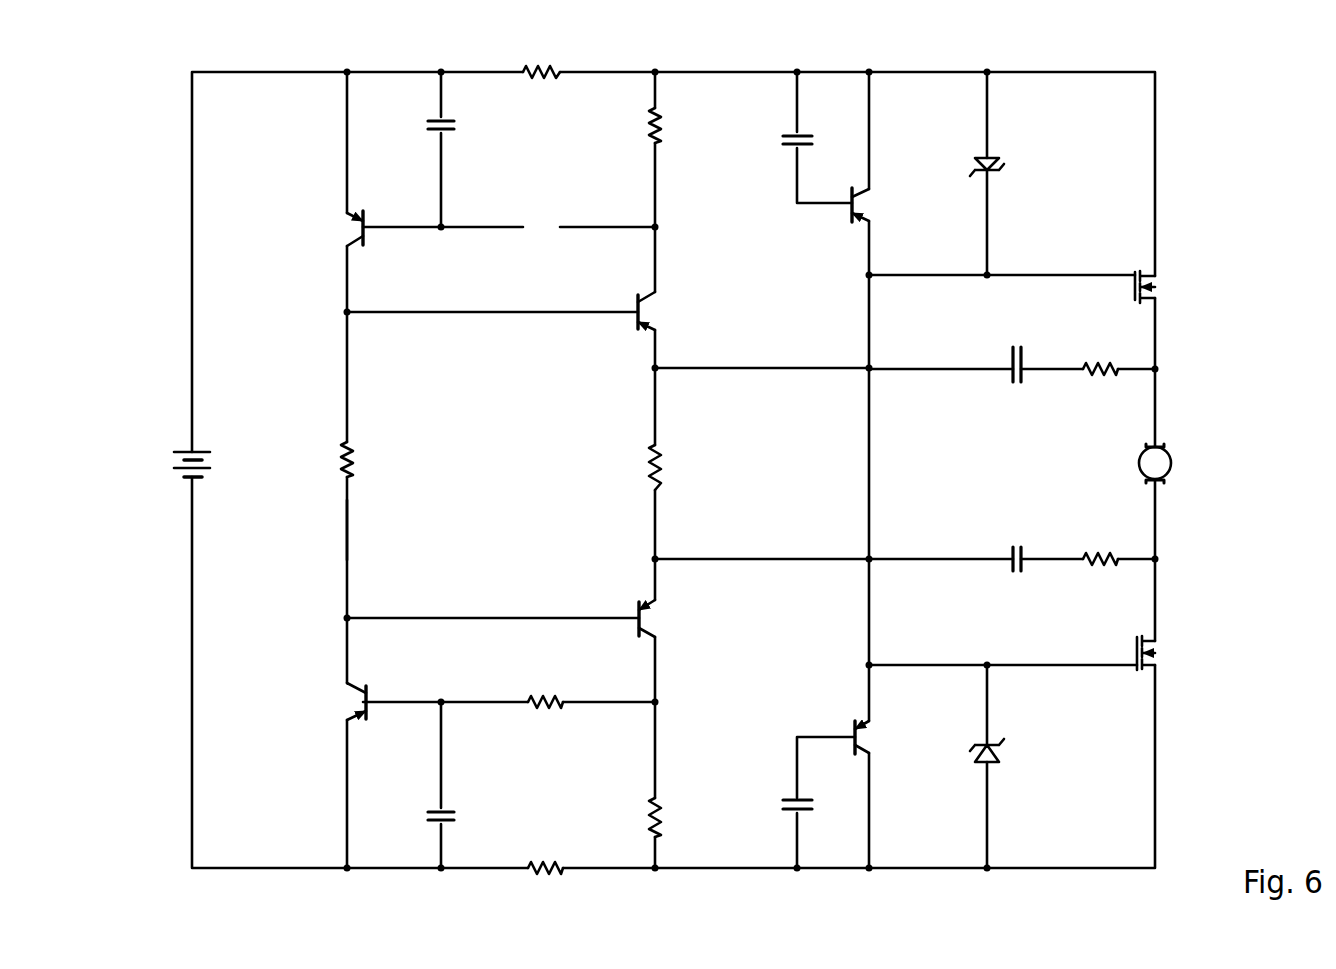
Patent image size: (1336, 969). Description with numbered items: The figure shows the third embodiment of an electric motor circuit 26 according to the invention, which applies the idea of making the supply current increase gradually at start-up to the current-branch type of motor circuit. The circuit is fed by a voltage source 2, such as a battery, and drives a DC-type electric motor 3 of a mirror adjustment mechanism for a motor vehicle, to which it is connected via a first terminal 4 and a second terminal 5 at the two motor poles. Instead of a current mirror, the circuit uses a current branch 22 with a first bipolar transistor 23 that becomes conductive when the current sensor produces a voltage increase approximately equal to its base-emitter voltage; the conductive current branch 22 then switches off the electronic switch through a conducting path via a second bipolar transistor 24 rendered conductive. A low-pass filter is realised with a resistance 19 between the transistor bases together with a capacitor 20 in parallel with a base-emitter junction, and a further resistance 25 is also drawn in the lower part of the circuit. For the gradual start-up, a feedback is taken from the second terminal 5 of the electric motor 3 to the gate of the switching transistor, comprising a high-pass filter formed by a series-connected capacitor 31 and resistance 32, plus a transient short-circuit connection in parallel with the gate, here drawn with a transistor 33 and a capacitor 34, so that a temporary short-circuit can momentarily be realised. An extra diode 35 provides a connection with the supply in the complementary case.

The voltage source 2 is at (165, 448).
The electric motor 3 is at (1177, 452).
The first terminal 4 is at (1158, 365).
The second terminal 5 is at (1158, 563).
The resistance 19 is at (560, 712).
The capacitor 20 is at (468, 810).
The current branch 22 is at (347, 528).
The first bipolar transistor 23 is at (340, 696).
The second bipolar transistor 24 is at (668, 623).
The resistor 25 is at (555, 857).
The electric motor circuit 26 is at (1226, 302).
The capacitor 31 is at (1014, 585).
The resistance 32 is at (1111, 582).
The transistor 33 is at (880, 728).
The capacitor 34 is at (778, 798).
The extra diode 35 is at (1013, 768).